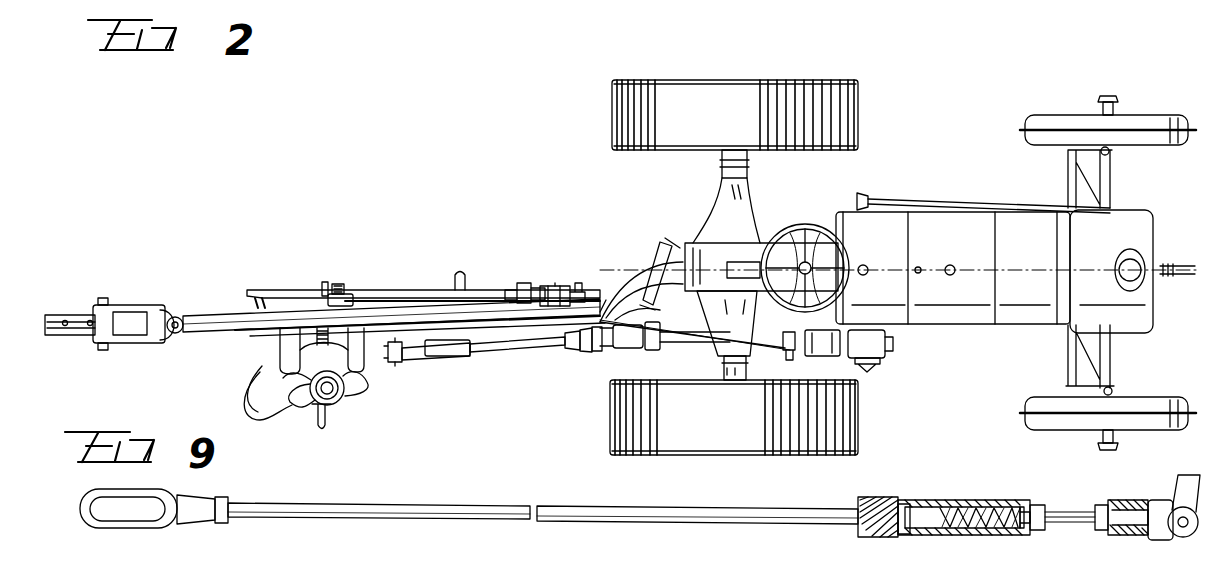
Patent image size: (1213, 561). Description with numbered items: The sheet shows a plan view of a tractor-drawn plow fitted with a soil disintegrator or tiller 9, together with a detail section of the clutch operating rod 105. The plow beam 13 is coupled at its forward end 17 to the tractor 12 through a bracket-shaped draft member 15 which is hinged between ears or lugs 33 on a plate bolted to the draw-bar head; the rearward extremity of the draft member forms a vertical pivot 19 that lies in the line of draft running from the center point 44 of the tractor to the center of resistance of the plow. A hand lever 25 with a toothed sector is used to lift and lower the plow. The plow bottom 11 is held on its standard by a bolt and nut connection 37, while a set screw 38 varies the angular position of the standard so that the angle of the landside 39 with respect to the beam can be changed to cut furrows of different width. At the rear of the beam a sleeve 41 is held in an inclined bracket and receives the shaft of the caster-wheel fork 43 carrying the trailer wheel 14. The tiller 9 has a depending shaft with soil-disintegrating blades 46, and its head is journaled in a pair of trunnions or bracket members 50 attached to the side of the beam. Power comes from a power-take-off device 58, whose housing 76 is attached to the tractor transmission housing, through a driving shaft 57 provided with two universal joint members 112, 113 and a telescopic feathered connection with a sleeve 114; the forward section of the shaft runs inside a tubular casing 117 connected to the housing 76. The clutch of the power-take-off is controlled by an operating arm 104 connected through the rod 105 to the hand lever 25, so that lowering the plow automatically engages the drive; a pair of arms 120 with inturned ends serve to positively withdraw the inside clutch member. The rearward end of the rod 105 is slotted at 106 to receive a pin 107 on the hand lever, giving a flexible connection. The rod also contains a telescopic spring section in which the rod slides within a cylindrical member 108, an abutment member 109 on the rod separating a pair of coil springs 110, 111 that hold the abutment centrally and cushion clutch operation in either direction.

In FIG. 2, the soil disintegrator or tiller 9 is at (338, 402).
In FIG. 2, the plow bottom 11 is at (285, 412).
In FIG. 2, the tractor 12 is at (952, 216).
In FIG. 2, the plow beam 13 is at (220, 317).
In FIG. 2, the trailer wheel 14 is at (60, 316).
In FIG. 2, the draft member 15 is at (638, 268).
In FIG. 2, the forward end of the plow beam 17 is at (534, 283).
In FIG. 2, the vertical pivot 19 is at (578, 286).
In FIG. 2, the hand lever 25 is at (710, 346).
In FIG. 2, the ears or lugs 33 is at (673, 225).
In FIG. 2, the bolt and nut connection 37 is at (354, 270).
In FIG. 2, the set screw 38 is at (325, 284).
In FIG. 2, the landside 39 is at (398, 292).
In FIG. 2, the sleeve 41 is at (162, 310).
In FIG. 2, the caster-wheel fork 43 is at (122, 305).
In FIG. 2, the center point of the tractor 44 is at (918, 268).
In FIG. 2, the soil-disintegrating blades 46 is at (324, 428).
In FIG. 2, the trunnions or bracket members 50 is at (280, 350).
In FIG. 2, the driving shaft 57 is at (512, 350).
In FIG. 2, the power-take-off device 58 is at (878, 358).
In FIG. 2, the power-take-off housing 76 is at (828, 368).
In FIG. 9, the operating arm 104 is at (1178, 500).
In FIG. 2, the clutch operating rod 105 is at (762, 324).
In FIG. 9, the clutch operating rod 105 is at (800, 510).
In FIG. 9, the slot 106 is at (150, 505).
In FIG. 2, the pin 107 is at (582, 352).
In FIG. 9, the cylindrical member 108 is at (985, 508).
In FIG. 9, the abutment member 109 is at (948, 528).
In FIG. 9, the coil spring 110 is at (918, 507).
In FIG. 9, the coil spring 111 is at (990, 530).
In FIG. 2, the universal joint member 112 is at (393, 368).
In FIG. 2, the universal joint member 113 is at (598, 353).
In FIG. 2, the sleeve 114 is at (450, 358).
In FIG. 2, the tubular casing 117 is at (774, 352).
In FIG. 2, the arms 120 is at (400, 330).